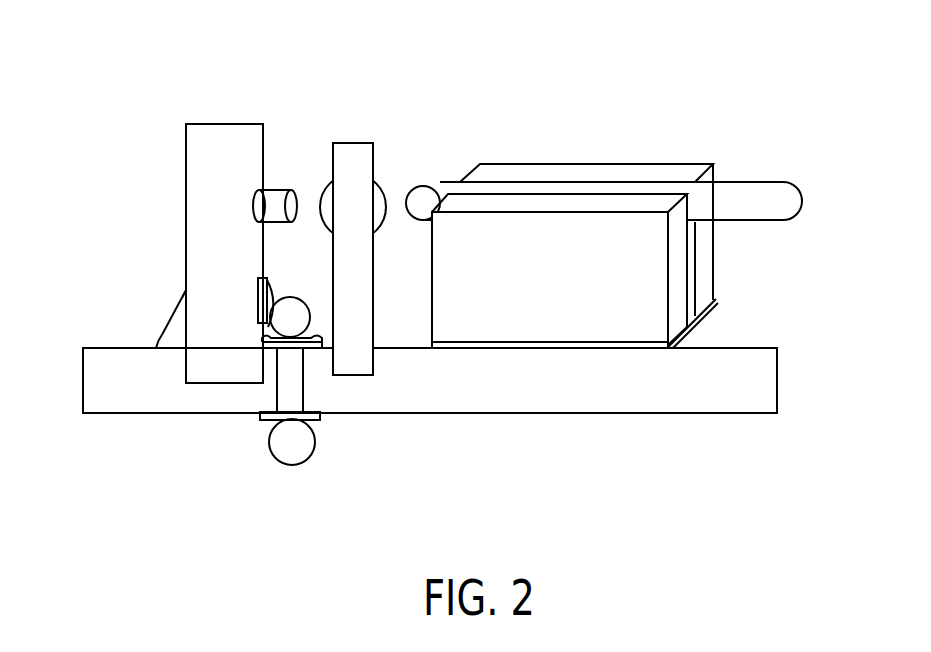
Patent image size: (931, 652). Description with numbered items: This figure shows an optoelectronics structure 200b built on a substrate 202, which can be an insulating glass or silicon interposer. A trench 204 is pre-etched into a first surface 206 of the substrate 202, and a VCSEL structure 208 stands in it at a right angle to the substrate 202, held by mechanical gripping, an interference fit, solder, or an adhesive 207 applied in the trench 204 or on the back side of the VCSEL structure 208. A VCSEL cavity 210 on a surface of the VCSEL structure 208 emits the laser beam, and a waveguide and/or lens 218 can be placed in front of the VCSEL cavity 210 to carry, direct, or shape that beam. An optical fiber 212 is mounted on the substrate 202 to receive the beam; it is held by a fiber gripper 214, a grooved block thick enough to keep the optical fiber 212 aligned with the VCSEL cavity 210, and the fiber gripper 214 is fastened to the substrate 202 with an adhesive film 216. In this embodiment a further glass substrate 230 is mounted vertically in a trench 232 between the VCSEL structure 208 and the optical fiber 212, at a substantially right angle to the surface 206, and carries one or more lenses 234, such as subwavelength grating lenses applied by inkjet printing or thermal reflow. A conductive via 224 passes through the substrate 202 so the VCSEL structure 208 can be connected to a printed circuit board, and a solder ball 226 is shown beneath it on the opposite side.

The optical assembly 200b is at (718, 80).
The substrate 202 is at (74, 348).
The trench 204 is at (181, 348).
The first surface 206 is at (96, 346).
The adhesive 207 is at (167, 330).
The VCSEL structure 208 is at (198, 160).
The VCSEL cavity 210 is at (256, 200).
The optical fiber 212 is at (627, 192).
The fiber gripper 214 is at (697, 262).
The adhesive film 216 is at (690, 333).
The waveguide and/or lens 218 is at (279, 188).
The via 224 is at (276, 383).
The ball joint 226 is at (297, 464).
The glass substrate 230 is at (356, 152).
The trench 232 is at (375, 348).
The lens 234 is at (381, 183).